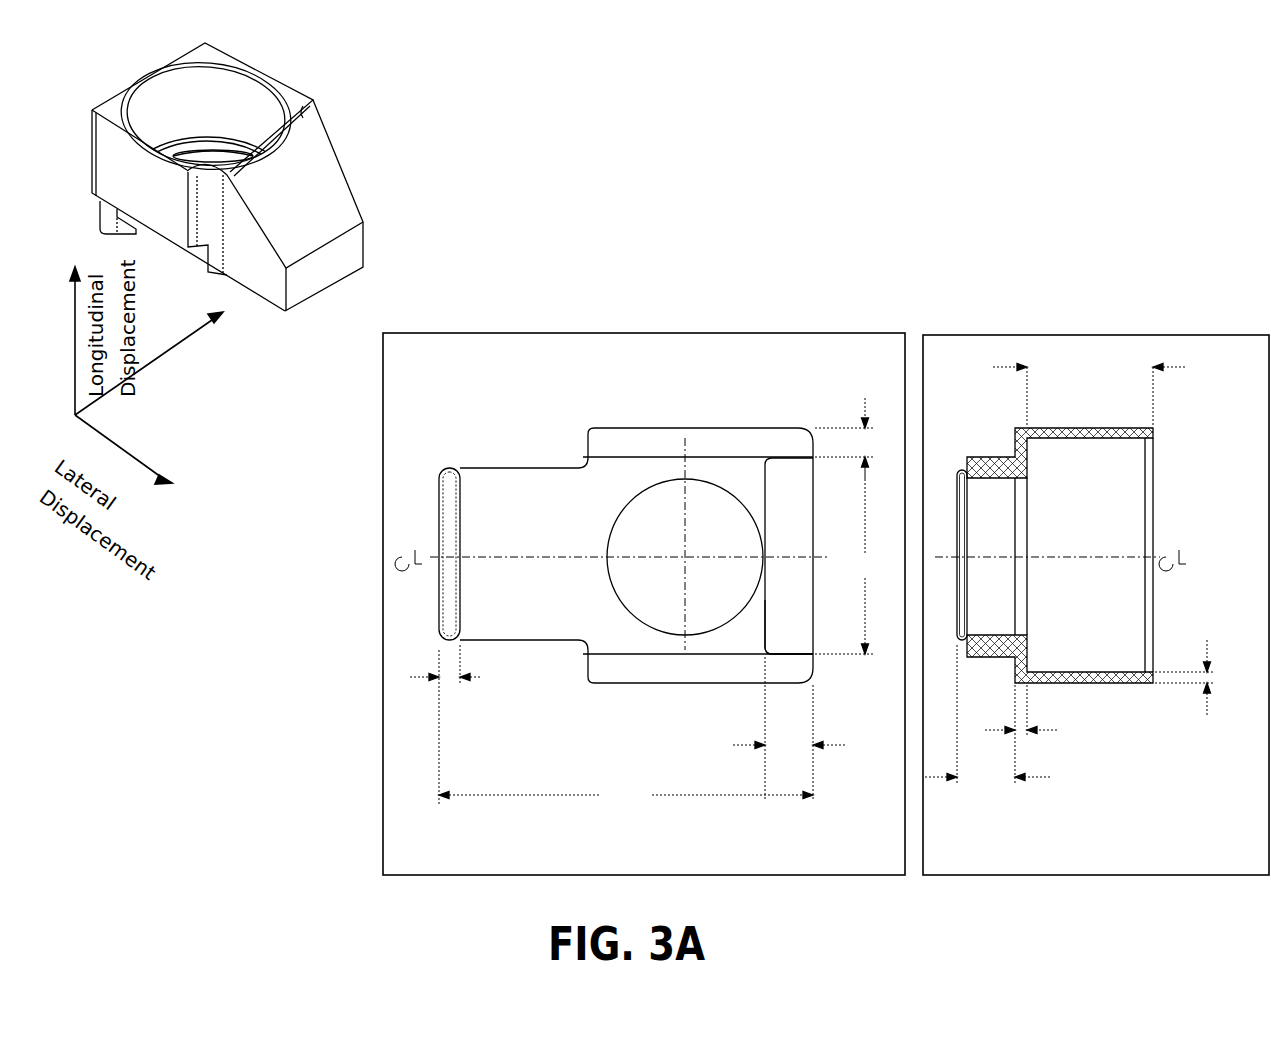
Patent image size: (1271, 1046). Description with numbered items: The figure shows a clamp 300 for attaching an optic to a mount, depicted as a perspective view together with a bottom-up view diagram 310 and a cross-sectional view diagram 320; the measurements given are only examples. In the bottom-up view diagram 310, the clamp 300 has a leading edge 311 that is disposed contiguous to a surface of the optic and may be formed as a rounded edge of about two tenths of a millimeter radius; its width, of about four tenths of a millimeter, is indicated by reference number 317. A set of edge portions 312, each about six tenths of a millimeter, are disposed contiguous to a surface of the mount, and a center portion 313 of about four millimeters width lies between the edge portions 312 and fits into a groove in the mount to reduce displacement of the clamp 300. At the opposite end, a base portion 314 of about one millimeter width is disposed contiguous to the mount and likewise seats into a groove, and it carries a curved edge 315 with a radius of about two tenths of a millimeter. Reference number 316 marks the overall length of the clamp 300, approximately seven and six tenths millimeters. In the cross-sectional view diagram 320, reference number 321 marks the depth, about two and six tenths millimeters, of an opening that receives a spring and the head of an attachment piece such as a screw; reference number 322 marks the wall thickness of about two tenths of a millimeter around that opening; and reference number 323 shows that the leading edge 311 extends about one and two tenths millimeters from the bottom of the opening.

The clamp 300 is at (138, 68).
The bottom-up view diagram 310 is at (663, 333).
The leading edge 311 is at (452, 468).
The edge portion 312 is at (845, 423).
The center portion 313 is at (850, 560).
The base portion 314 is at (789, 629).
The curved edge 315 is at (767, 657).
The length of the clamp 316 is at (626, 728).
The width of the leading edge 317 is at (470, 668).
The cross-sectional view diagram 320 is at (1118, 334).
The depth of the opening 321 is at (1089, 393).
The wall thickness for the opening 322 is at (1123, 704).
The extension of the leading edge 323 is at (1013, 716).